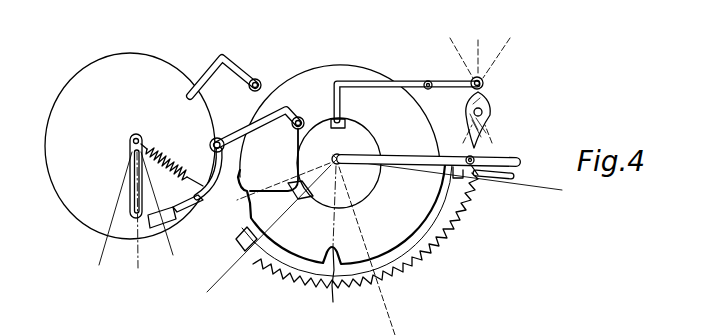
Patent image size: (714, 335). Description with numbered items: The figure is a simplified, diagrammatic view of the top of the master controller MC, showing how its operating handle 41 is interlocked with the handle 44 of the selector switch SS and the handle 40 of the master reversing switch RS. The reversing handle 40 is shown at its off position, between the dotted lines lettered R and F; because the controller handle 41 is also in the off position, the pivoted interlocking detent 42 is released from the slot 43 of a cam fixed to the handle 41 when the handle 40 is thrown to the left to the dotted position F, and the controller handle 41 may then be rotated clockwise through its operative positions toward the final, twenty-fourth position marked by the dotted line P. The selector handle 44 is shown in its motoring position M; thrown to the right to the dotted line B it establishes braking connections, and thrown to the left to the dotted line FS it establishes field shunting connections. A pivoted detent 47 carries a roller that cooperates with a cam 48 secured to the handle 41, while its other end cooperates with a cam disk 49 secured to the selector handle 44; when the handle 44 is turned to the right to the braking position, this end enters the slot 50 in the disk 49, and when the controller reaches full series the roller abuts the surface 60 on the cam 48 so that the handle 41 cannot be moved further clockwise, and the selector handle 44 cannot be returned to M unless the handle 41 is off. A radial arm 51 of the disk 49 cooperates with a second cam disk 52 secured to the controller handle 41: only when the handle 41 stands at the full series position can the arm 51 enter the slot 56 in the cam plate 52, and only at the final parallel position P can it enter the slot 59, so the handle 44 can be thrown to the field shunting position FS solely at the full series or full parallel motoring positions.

The selector switch SS is at (130, 135).
The cam disk 49 is at (156, 111).
The selector switch handle 44 is at (130, 195).
The field shunting position FS is at (108, 217).
The motoring position M is at (138, 220).
The braking position B is at (163, 217).
The slot in cam plate 56 is at (241, 199).
The slot in cam disk 50 is at (184, 217).
The radial arm 51 is at (252, 79).
The master controller MC is at (341, 147).
The cam disk 52 is at (318, 54).
The slot in cam disk 59 is at (357, 246).
The pivoted detent 47 is at (262, 128).
The pivoted interlocking detent 42 is at (407, 100).
The slot of cam 43 is at (331, 119).
The cam 48 is at (339, 163).
The surface on cam disk 60 is at (283, 181).
The final operative position P is at (382, 247).
The master controller handle 41 is at (522, 163).
The master reversing switch handle 40 is at (488, 138).
The master reversing switch RS is at (519, 83).
The reverse position R is at (455, 80).
The off position off is at (479, 46).
The reversing handle thrown position F is at (500, 81).